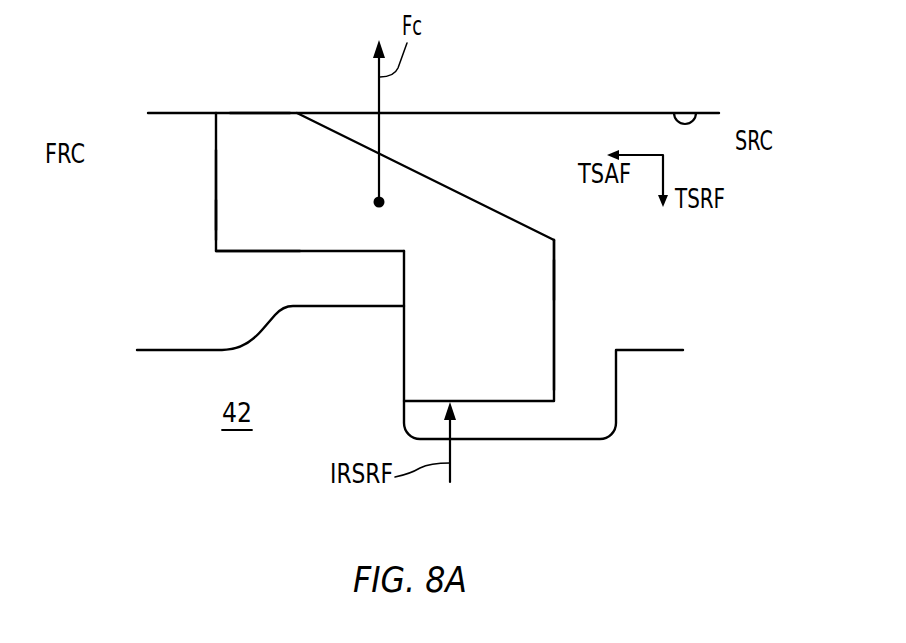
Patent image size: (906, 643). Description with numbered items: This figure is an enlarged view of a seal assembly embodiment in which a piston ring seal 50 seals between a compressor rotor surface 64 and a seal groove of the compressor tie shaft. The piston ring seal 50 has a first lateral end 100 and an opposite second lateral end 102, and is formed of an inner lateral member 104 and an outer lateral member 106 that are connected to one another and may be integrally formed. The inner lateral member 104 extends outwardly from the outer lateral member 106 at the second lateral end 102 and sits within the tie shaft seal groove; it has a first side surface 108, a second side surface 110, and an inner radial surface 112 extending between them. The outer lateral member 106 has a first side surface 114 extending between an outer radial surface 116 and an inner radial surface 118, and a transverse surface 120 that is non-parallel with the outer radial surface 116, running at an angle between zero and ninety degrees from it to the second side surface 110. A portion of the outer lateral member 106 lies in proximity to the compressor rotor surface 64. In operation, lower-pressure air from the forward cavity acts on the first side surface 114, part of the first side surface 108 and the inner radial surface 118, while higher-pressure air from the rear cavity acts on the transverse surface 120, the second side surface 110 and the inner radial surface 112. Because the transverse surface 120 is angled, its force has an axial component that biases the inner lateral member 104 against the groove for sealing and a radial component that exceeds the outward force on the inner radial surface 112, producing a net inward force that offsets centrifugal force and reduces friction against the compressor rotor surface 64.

The piston ring seal 50 is at (548, 141).
The compressor rotor surface 64 is at (690, 113).
The first lateral end 100 is at (183, 226).
The second lateral end 102 is at (592, 242).
The inner lateral member 104 is at (493, 330).
The outer lateral member 106 is at (302, 200).
The first side surface 108 is at (403, 272).
The second side surface 110 is at (555, 318).
The inner radial surface 112 is at (490, 401).
The first side surface 114 is at (215, 172).
The outer radial surface 116 is at (260, 113).
The inner radial surface 118 is at (247, 253).
The transverse surface 120 is at (430, 160).